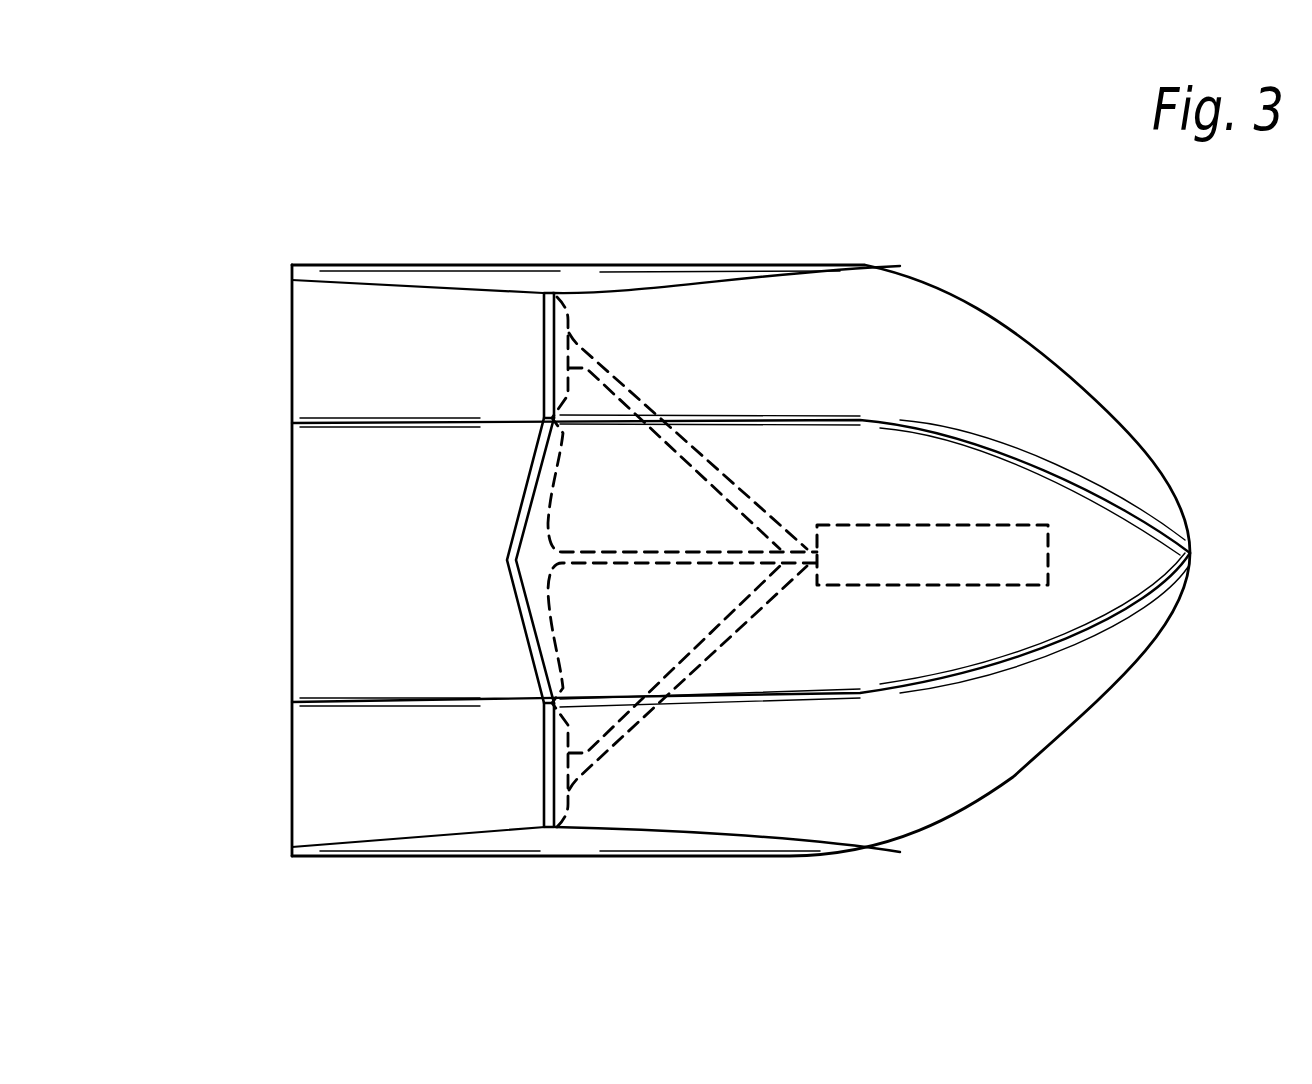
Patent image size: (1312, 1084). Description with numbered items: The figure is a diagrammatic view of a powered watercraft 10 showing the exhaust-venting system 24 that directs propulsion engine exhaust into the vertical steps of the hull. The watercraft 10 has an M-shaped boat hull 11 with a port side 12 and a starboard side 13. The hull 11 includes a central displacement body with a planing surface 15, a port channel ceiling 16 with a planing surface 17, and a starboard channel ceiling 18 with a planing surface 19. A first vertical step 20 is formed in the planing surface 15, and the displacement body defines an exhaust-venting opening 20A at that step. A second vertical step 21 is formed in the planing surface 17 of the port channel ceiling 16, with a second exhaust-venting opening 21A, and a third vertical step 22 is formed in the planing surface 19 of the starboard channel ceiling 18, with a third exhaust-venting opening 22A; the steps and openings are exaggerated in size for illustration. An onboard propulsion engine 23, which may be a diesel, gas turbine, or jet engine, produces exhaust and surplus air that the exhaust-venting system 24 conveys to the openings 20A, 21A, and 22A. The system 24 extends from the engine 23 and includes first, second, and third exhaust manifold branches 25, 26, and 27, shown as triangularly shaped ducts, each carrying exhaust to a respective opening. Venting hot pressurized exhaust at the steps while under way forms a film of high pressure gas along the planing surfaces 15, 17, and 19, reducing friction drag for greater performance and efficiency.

The powered watercraft 10 is at (254, 178).
The M-shaped boat hull 11 is at (1073, 378).
The port side 12 is at (792, 856).
The starboard side 13 is at (755, 265).
The planing surface 15 is at (327, 624).
The port channel ceiling 16 is at (735, 770).
The planing surface 17 is at (327, 797).
The starboard channel ceiling 18 is at (733, 363).
The planing surface 19 is at (325, 353).
The first vertical step 20 is at (522, 483).
The exhaust-venting opening 20A is at (478, 533).
The second vertical step 21 is at (545, 826).
The second exhaust-venting opening 21A is at (490, 768).
The third vertical step 22 is at (543, 296).
The third exhaust-venting opening 22A is at (485, 353).
The onboard propulsion engine 23 is at (1043, 525).
The exhaust-venting system 24 is at (787, 438).
The first exhaust manifold branch 25 is at (617, 550).
The second exhaust manifold branch 26 is at (583, 777).
The third exhaust manifold branch 27 is at (645, 395).